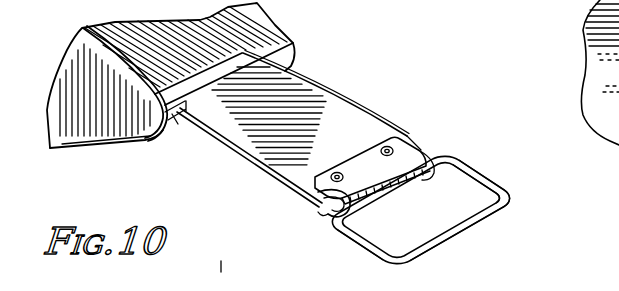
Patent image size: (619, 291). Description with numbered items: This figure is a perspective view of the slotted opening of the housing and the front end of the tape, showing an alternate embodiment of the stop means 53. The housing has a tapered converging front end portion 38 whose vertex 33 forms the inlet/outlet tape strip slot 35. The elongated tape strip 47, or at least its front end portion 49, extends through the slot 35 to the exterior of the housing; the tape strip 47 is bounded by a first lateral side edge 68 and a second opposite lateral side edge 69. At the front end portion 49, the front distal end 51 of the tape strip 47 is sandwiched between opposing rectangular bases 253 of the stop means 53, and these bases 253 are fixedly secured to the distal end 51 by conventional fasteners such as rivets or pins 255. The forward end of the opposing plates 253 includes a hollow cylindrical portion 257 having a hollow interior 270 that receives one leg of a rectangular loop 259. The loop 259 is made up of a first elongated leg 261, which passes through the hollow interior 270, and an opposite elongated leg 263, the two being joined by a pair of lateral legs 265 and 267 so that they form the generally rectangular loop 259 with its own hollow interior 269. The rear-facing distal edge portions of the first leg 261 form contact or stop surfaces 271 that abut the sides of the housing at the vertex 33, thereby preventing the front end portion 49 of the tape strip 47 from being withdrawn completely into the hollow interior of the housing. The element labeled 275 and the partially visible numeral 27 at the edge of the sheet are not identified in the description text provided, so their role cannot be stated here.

The tapered converging front end portion 38 is at (83, 76).
The vertex 33 is at (131, 129).
The inlet/outlet tape strip slot 35 is at (185, 122).
The tape strip 47 is at (306, 72).
The first lateral side edge 68 is at (336, 92).
The front end portion 49 is at (357, 117).
The second opposite lateral side edge 69 is at (281, 177).
The front distal end 51 is at (422, 148).
The stop means 53 is at (482, 159).
The rectangular bases 253 is at (327, 176).
The rivets or pins 255 is at (382, 148).
The hollow cylindrical portion 257 is at (388, 201).
The rectangular loop 259 is at (515, 212).
The first elongated leg 261 is at (443, 170).
The opposite elongated leg 263 is at (458, 236).
The lateral leg 265 is at (372, 249).
The lateral leg 267 is at (495, 181).
The hollow interior 269 is at (462, 200).
The contact or stop surfaces 271 is at (433, 148).
The hollow interior 270 is at (326, 217).
The second buckle ring 275 is at (582, 33).
The partial numeral 27 is at (608, 77).